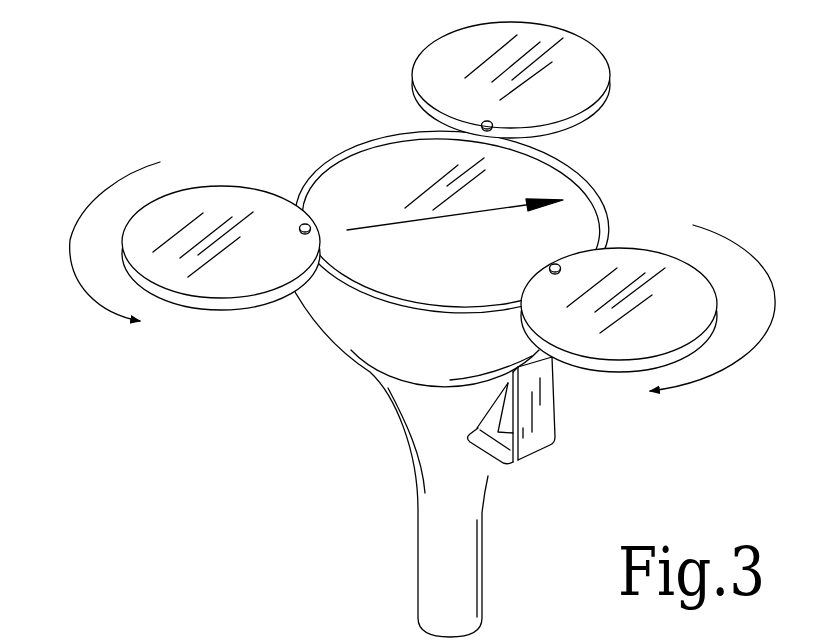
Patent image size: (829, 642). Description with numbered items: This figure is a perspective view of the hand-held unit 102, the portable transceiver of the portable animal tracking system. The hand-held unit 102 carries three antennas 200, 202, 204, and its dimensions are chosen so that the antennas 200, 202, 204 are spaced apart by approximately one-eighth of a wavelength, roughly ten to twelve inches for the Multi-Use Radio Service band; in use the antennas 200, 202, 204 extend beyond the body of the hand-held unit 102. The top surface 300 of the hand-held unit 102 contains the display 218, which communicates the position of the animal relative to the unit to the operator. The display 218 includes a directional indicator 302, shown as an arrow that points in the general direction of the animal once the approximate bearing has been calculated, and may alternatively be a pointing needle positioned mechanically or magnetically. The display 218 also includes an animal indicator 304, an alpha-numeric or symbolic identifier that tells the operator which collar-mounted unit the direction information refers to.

The hand-held unit 102 is at (422, 329).
The antenna 200 is at (600, 48).
The antenna 202 is at (642, 263).
The antenna 204 is at (197, 300).
The display 218 is at (530, 183).
The top surface 300 is at (316, 308).
The directional indicator 302 is at (380, 225).
The animal indicator 304 is at (328, 200).